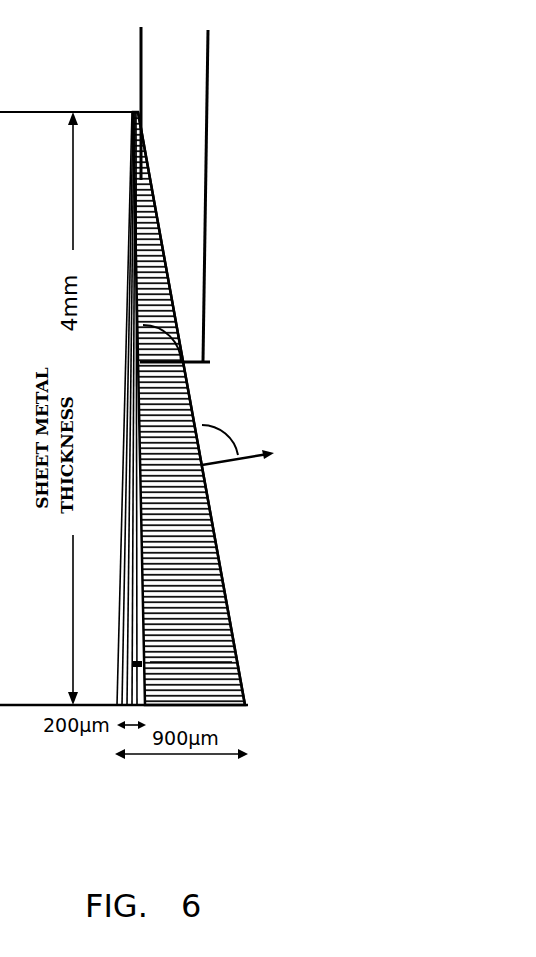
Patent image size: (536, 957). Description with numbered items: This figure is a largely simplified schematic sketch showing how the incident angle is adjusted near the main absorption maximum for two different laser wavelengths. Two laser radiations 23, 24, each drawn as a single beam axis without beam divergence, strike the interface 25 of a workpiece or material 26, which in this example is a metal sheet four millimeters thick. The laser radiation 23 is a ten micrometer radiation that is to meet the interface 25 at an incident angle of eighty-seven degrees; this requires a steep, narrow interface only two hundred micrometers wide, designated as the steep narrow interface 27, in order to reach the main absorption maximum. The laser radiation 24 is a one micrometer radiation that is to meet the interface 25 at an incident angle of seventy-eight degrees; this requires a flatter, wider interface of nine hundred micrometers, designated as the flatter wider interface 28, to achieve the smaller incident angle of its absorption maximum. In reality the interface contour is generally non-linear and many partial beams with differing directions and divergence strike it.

The laser radiation 23 is at (140, 70).
The laser radiation 24 is at (208, 142).
The interface 25 is at (147, 537).
The material 26 is at (158, 660).
The steep narrow interface 27 is at (223, 577).
The flatter wider interface 28 is at (143, 629).